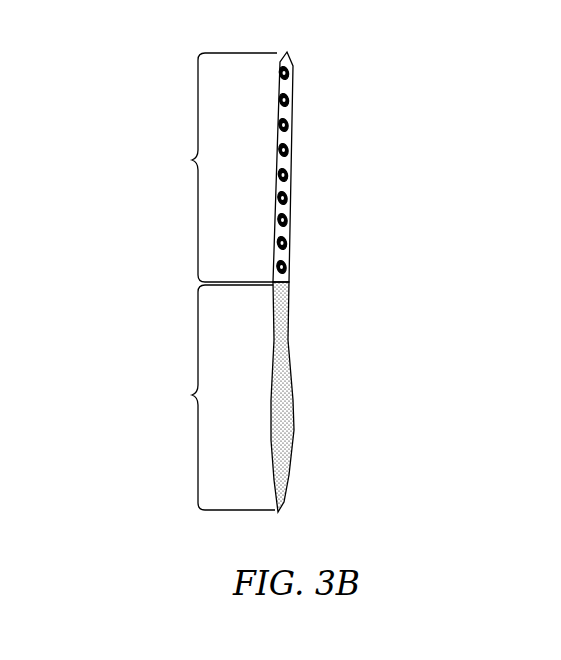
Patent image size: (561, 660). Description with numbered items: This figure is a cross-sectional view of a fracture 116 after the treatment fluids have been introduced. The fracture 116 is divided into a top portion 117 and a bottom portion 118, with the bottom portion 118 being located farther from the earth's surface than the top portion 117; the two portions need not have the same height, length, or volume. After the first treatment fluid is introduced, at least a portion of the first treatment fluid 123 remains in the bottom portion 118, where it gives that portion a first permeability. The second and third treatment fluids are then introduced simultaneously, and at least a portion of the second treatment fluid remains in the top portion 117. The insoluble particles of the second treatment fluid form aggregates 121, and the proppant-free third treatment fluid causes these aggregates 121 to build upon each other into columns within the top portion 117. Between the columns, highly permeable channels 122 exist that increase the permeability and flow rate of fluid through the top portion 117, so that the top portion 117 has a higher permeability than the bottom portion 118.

The fracture 116 is at (344, 260).
The top portion 117 is at (193, 159).
The bottom portion 118 is at (193, 394).
The aggregates 121 is at (293, 127).
The highly permeable channels 122 is at (293, 163).
The first treatment fluid 123 is at (288, 339).